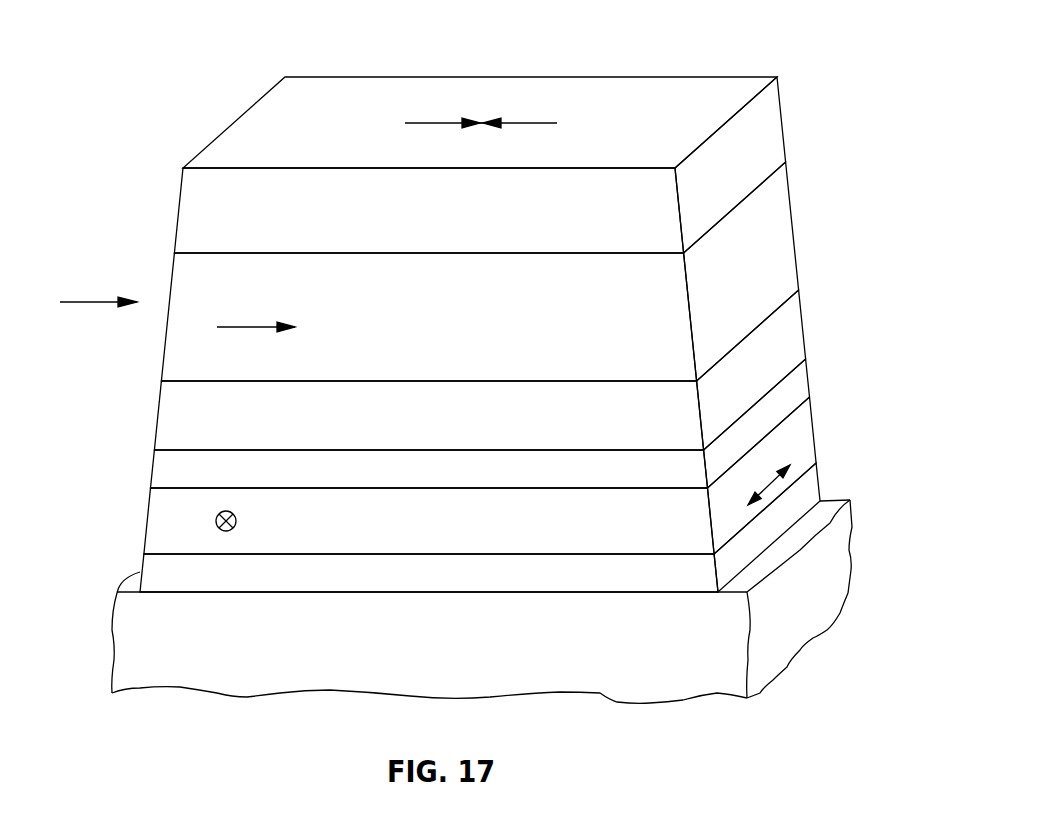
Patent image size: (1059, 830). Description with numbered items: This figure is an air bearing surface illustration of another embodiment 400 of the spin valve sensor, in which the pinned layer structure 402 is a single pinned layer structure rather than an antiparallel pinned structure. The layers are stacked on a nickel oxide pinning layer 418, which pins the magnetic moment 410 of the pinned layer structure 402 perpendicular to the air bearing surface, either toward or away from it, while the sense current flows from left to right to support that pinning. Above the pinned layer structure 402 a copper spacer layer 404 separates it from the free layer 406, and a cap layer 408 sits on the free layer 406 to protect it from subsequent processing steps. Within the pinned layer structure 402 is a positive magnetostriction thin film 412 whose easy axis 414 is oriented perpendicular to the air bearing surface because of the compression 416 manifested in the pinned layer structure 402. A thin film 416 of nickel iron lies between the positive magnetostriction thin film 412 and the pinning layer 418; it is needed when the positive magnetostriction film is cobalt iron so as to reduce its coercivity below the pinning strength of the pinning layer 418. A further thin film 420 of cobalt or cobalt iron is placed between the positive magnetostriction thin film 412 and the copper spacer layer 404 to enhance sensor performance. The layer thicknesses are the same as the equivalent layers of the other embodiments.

The spin valve sensor embodiment 400 is at (680, 58).
The pinned layer structure 402 is at (488, 575).
The spacer layer 404 is at (800, 324).
The free layer 406 is at (783, 227).
The cap layer 408 is at (775, 123).
The magnetic moment 410 is at (226, 531).
The positive magnetostriction thin film 412 is at (808, 437).
The easy axis 414 is at (763, 485).
The compression 416 is at (535, 123).
The pinning layer 418 is at (788, 648).
The thin film of cobalt or cobalt iron 420 is at (805, 385).